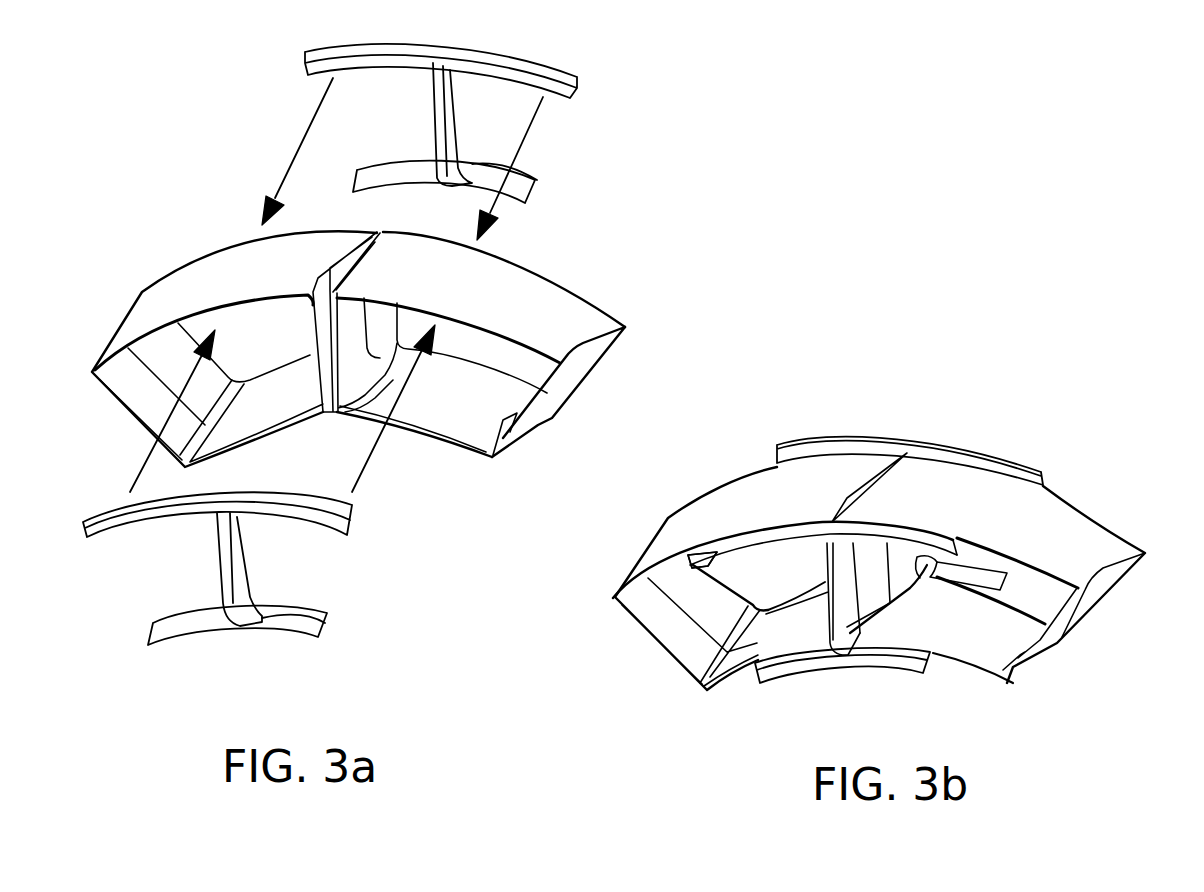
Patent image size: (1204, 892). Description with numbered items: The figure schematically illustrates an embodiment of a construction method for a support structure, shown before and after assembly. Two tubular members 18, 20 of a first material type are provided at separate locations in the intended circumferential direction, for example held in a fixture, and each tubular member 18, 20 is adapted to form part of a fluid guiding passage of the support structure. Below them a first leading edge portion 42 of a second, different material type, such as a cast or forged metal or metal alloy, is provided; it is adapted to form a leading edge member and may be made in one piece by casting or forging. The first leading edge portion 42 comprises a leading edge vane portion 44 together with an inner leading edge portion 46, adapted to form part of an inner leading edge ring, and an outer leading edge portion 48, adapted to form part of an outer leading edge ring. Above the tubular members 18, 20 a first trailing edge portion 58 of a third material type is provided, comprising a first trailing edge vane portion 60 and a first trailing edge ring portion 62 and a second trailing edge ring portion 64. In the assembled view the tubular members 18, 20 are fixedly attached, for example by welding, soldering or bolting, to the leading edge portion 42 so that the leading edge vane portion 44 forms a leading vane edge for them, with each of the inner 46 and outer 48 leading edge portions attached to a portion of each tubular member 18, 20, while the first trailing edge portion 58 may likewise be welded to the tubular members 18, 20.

In FIG. 3a, the tubular member 18 is at (187, 292).
In FIG. 3b, the tubular member 18 is at (733, 498).
In FIG. 3a, the tubular member 20 is at (553, 307).
In FIG. 3b, the tubular member 20 is at (1073, 530).
In FIG. 3a, the first leading edge portion 42 is at (265, 624).
In FIG. 3b, the first leading edge portion 42 is at (785, 635).
In FIG. 3a, the leading edge vane portion 44 is at (240, 562).
In FIG. 3a, the inner leading edge portion 46 is at (313, 642).
In FIG. 3b, the inner leading edge portion 46 is at (908, 670).
In FIG. 3a, the outer leading edge portion 48 is at (340, 518).
In FIG. 3b, the outer leading edge portion 48 is at (720, 555).
In FIG. 3a, the first trailing edge portion 58 is at (490, 131).
In FIG. 3b, the first trailing edge portion 58 is at (910, 470).
In FIG. 3a, the first trailing edge vane portion 60 is at (450, 120).
In FIG. 3b, the first trailing edge vane portion 60 is at (892, 588).
In FIG. 3a, the first trailing edge ring portion 62 is at (520, 185).
In FIG. 3b, the first trailing edge ring portion 62 is at (968, 576).
In FIG. 3a, the second trailing edge ring portion 64 is at (567, 78).
In FIG. 3b, the second trailing edge ring portion 64 is at (910, 461).